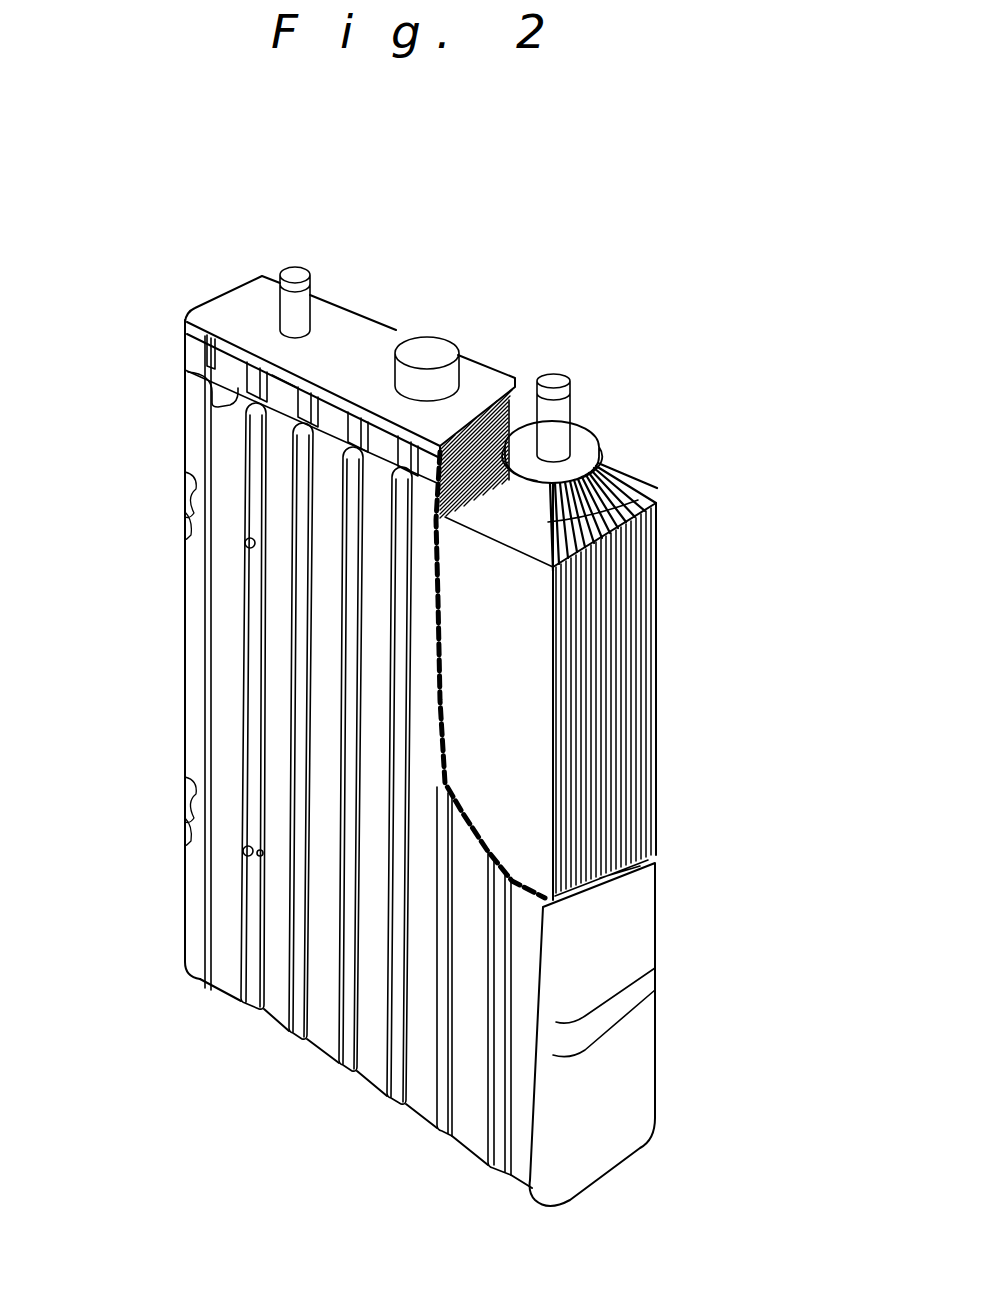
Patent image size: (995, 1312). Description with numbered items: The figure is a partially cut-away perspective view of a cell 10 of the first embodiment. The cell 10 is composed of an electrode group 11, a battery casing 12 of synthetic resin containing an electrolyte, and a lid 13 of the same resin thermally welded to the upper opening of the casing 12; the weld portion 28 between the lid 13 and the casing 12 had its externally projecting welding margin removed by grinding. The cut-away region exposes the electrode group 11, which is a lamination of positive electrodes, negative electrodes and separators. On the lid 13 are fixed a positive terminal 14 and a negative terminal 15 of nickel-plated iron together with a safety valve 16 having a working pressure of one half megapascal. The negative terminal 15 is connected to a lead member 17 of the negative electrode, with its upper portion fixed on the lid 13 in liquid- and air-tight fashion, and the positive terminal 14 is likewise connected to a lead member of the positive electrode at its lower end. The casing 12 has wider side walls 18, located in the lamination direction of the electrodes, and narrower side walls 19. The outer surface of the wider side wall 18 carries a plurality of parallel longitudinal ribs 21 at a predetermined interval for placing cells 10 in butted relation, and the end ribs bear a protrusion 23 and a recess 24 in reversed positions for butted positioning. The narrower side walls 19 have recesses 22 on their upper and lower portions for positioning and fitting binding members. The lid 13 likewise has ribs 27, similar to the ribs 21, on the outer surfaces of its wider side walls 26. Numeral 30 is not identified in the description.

The cell 10 is at (162, 320).
The electrode group 11 is at (625, 597).
The battery casing 12 is at (188, 455).
The lid 13 is at (358, 322).
The positive terminal 14 is at (295, 275).
The negative terminal 15 is at (552, 383).
The safety valve 16 is at (432, 352).
The lead member 17 is at (527, 522).
The wider side wall 18 is at (270, 907).
The narrower side wall 19 is at (623, 935).
The rib 21 is at (250, 697).
The recess 22 is at (607, 1013).
The protrusion 23 is at (245, 545).
The recess 24 is at (243, 850).
The wider side wall 26 is at (285, 382).
The rib 27 is at (203, 345).
The weld portion 28 is at (193, 400).
The side edge 30 is at (196, 598).